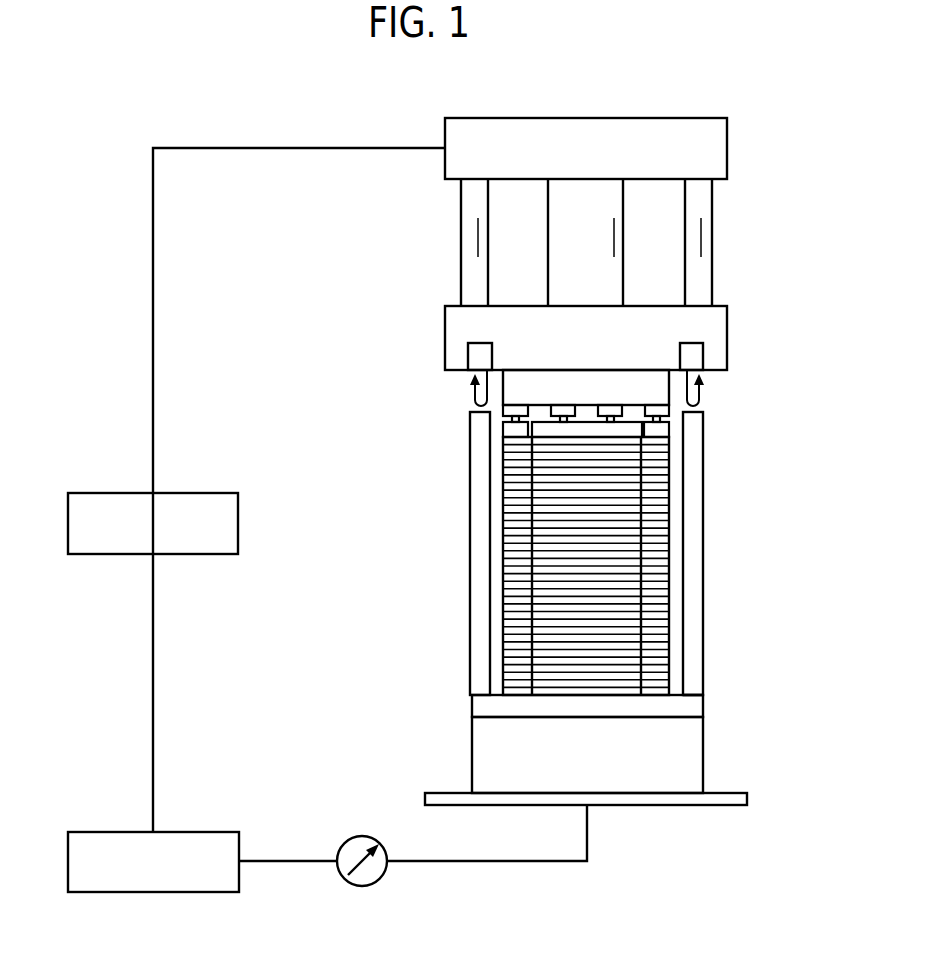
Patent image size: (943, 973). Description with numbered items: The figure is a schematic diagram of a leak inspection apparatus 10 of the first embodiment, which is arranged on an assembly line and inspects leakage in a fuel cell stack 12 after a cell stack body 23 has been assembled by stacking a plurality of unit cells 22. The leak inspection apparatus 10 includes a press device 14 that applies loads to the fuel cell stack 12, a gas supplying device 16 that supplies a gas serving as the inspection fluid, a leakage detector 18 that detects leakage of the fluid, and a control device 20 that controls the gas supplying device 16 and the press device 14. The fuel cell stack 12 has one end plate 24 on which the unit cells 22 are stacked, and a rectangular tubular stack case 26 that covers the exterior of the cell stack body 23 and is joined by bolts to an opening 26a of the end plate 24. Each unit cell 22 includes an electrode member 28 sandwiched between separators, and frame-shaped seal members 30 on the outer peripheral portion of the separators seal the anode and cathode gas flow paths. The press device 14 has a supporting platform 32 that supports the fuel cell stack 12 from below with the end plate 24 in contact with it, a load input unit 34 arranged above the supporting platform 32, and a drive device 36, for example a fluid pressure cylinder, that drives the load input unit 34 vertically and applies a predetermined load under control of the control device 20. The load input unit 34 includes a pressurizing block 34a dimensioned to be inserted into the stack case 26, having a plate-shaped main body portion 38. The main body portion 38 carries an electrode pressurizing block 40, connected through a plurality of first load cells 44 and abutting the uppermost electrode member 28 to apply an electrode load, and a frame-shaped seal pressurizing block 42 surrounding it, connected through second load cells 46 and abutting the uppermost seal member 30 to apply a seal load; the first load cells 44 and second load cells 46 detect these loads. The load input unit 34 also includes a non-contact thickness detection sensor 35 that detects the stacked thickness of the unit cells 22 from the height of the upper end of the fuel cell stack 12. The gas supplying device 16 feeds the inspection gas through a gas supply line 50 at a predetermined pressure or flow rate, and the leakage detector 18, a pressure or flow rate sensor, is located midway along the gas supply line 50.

The leak inspection apparatus 10 is at (163, 86).
The fuel cell stack 12 is at (712, 446).
The press device 14 is at (703, 99).
The gas supplying device 16 is at (195, 832).
The leakage detector 18 is at (349, 839).
The control device 20 is at (193, 493).
The unit cells 22 is at (663, 627).
The cell stack body 23 is at (672, 596).
The end plate 24 is at (690, 712).
The stack case 26 is at (685, 555).
The opening 26a is at (696, 703).
The electrode member 28 is at (630, 535).
The seal members 30 is at (662, 489).
The supporting platform 32 is at (682, 755).
The load input unit 34 is at (713, 327).
The pressurizing block 34a is at (670, 393).
The thickness detection sensor 35 is at (478, 358).
The drive device 36 is at (573, 118).
The main body portion 38 is at (586, 387).
The electrode pressurizing block 40 is at (548, 430).
The seal pressurizing block 42 is at (515, 428).
The first load cells 44 is at (612, 412).
The second load cells 46 is at (515, 410).
The gas supply line 50 is at (465, 863).